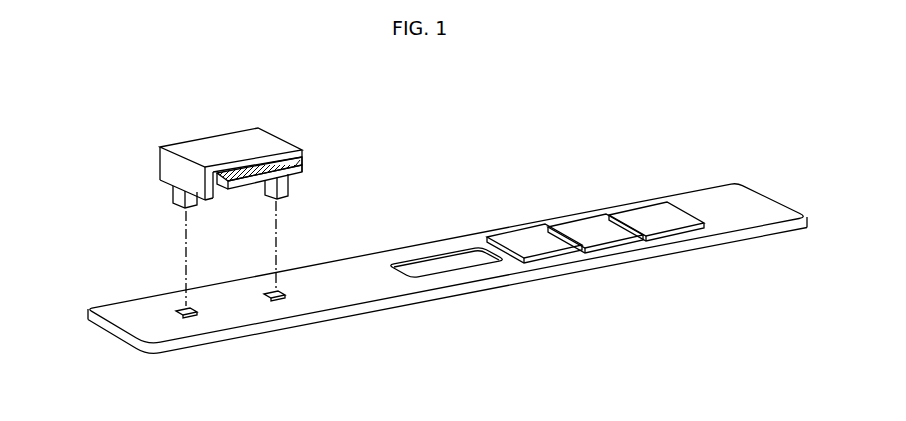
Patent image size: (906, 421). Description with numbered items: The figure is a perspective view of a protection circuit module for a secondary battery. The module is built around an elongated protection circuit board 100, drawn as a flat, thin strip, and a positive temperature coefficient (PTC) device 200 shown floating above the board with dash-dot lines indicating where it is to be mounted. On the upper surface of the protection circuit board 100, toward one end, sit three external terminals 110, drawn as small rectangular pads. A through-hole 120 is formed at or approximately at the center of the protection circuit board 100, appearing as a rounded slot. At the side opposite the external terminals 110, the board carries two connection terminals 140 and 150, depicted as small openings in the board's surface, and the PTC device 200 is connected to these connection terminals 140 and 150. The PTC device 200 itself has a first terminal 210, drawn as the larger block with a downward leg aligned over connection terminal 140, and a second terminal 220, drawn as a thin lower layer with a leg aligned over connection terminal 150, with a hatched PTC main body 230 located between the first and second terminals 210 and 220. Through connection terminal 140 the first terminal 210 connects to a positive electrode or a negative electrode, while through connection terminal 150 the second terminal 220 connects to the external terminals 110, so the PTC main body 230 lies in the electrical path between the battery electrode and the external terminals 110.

The protection circuit board 100 is at (132, 323).
The external terminals 110 is at (585, 228).
The through-hole 120 is at (468, 263).
The connection terminal 140 is at (198, 318).
The connection terminal 150 is at (288, 298).
The positive temperature coefficient (PTC) device 200 is at (219, 146).
The first terminal 210 is at (227, 142).
The second terminal 220 is at (298, 170).
The PTC main body 230 is at (297, 159).